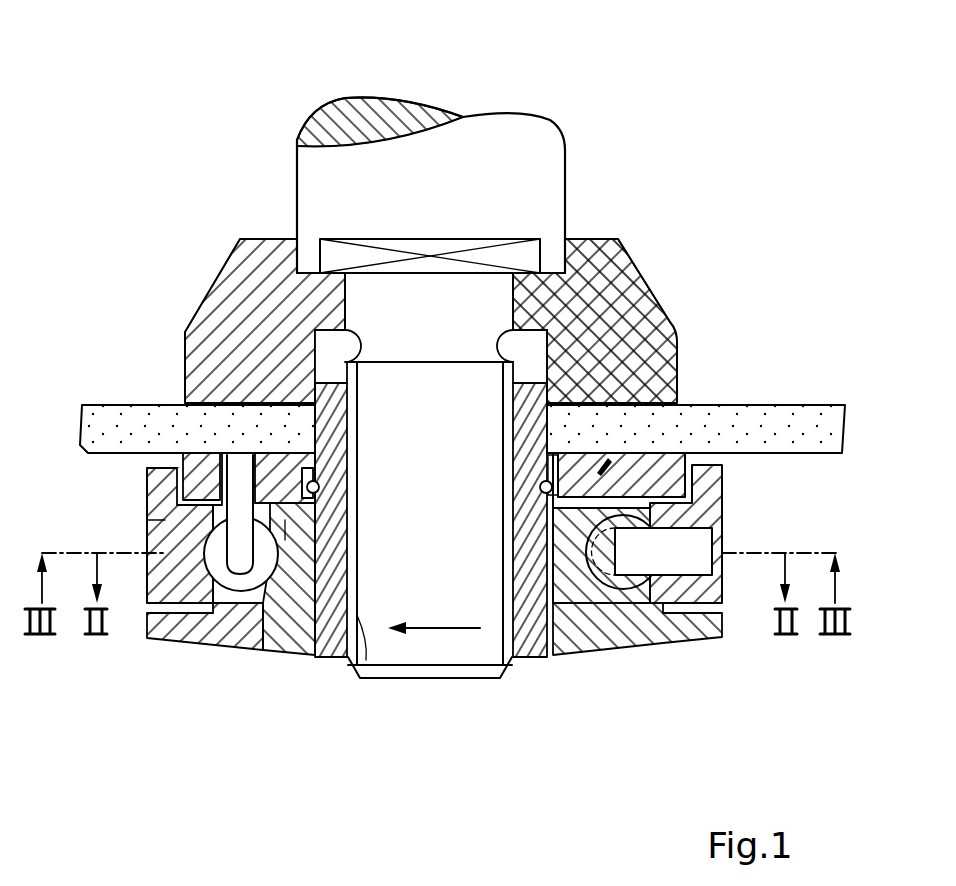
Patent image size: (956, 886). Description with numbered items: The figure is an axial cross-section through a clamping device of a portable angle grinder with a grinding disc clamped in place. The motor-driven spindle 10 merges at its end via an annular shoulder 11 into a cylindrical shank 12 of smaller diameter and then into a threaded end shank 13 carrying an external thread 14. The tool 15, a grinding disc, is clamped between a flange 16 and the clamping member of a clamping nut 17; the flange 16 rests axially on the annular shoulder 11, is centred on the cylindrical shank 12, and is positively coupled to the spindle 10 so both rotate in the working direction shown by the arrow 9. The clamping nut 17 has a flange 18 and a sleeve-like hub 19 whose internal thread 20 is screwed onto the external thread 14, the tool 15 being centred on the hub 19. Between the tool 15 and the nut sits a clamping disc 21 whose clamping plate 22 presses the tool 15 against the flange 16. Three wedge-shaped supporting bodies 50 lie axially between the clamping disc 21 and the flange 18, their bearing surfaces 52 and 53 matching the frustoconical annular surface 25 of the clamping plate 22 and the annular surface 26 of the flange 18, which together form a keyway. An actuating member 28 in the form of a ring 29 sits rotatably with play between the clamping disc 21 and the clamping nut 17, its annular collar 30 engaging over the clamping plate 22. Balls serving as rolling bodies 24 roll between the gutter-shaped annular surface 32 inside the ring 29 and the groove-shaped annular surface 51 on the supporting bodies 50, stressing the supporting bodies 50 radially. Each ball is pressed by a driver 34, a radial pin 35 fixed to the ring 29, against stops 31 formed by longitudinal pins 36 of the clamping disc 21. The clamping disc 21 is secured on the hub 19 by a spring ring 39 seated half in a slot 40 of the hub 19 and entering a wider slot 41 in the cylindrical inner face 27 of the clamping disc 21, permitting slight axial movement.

The arrow 9 is at (446, 628).
The spindle 10 is at (467, 128).
The annular shoulder 11 is at (503, 310).
The cylindrical shank 12 is at (598, 256).
The threaded end shank 13 is at (396, 655).
The external thread 14 is at (362, 642).
The tool 15 is at (745, 415).
The flange 16 is at (637, 330).
The clamping nut 17 is at (722, 654).
The flange 18 is at (612, 592).
The hub 19 is at (645, 322).
The internal thread 20 is at (652, 290).
The clamping disc 21 is at (560, 452).
The clamping plate 22 is at (650, 465).
The rolling bodies 24 is at (210, 455).
The annular surface 25 is at (556, 537).
The annular surface 26 is at (575, 592).
The inner face 27 is at (318, 482).
The actuating member 28 is at (140, 489).
The ring 29 is at (173, 577).
The annular collar 30 is at (165, 466).
The stops 31 is at (195, 528).
The annular surface 32 is at (200, 642).
The driver 34 is at (680, 548).
The radial pin 35 is at (715, 500).
The longitudinal pins 36 is at (240, 576).
The spring ring 39 is at (322, 487).
The slot 40 is at (538, 488).
The slot 41 is at (542, 392).
The supporting bodies 50 is at (300, 530).
The annular surface 51 is at (252, 593).
The bearing surface 52 is at (232, 330).
The bearing surface 53 is at (295, 600).